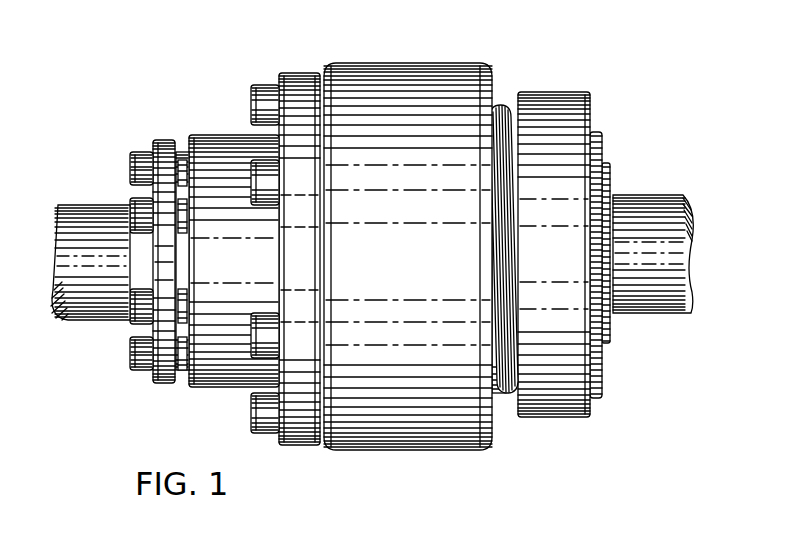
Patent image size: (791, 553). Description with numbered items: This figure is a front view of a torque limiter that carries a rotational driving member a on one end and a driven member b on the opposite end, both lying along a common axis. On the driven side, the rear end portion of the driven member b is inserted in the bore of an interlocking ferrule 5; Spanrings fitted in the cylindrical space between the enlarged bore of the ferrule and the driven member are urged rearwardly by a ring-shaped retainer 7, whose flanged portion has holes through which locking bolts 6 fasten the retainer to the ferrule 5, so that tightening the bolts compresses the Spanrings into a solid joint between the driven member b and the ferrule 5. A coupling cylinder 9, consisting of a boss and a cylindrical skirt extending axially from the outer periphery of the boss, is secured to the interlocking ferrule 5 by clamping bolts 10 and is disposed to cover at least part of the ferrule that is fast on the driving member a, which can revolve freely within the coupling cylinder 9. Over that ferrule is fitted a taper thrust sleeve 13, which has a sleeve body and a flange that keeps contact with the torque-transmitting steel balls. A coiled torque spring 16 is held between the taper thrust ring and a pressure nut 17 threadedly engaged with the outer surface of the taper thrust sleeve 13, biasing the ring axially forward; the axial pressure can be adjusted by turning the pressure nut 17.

The interlocking ferrule 5 is at (215, 150).
The locking bolts 6 is at (129, 190).
The ring-shaped retainer 7 is at (165, 152).
The coupling cylinder 9 is at (400, 80).
The clamping bolts 10 is at (255, 167).
The taper thrust sleeve 13 is at (499, 390).
The coiled torque spring 16 is at (500, 105).
The pressure nut 17 is at (556, 118).
The rotational driving member a is at (645, 215).
The driven member b is at (78, 222).